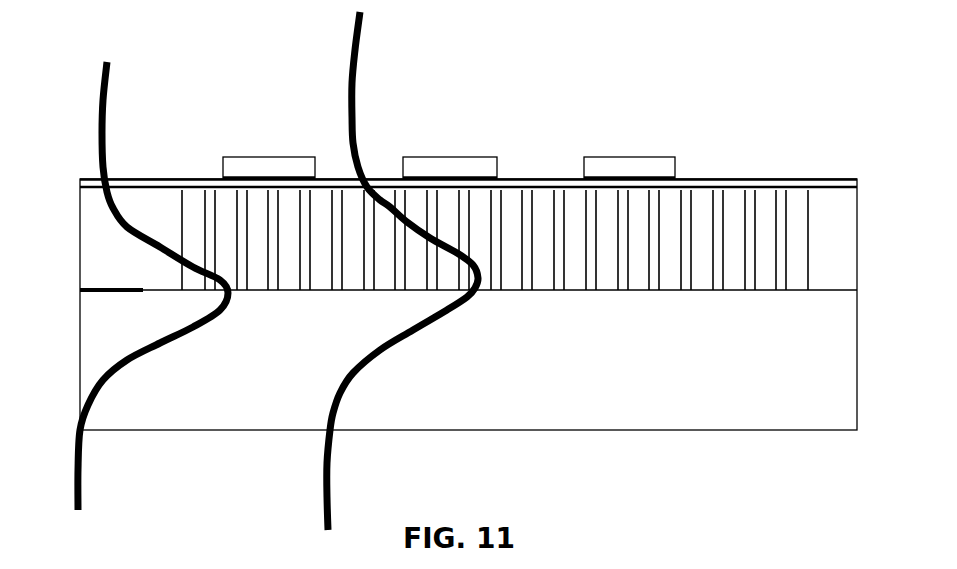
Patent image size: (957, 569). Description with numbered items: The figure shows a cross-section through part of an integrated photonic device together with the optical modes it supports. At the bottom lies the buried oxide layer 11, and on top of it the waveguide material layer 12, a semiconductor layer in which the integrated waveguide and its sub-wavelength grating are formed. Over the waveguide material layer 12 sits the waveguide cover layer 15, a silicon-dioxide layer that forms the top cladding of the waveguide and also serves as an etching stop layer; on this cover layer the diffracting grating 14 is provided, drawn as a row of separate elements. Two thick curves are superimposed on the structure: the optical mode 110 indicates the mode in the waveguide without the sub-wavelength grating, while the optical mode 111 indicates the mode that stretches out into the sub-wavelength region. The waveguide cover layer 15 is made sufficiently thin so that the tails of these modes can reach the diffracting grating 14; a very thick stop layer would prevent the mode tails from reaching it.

The buried oxide layer 11 is at (778, 414).
The waveguide material layer 12 is at (828, 225).
The diffracting grating 14 is at (612, 155).
The waveguide cover layer 15 is at (718, 180).
The optical mode 110 is at (112, 82).
The optical mode 111 is at (358, 80).